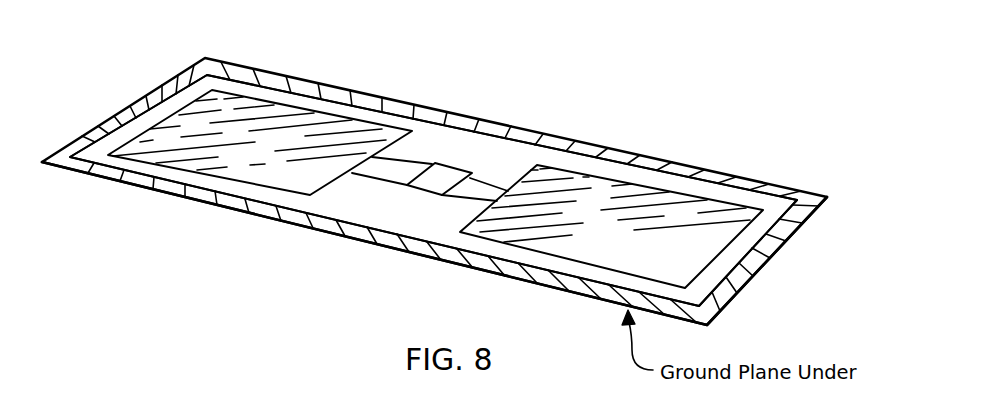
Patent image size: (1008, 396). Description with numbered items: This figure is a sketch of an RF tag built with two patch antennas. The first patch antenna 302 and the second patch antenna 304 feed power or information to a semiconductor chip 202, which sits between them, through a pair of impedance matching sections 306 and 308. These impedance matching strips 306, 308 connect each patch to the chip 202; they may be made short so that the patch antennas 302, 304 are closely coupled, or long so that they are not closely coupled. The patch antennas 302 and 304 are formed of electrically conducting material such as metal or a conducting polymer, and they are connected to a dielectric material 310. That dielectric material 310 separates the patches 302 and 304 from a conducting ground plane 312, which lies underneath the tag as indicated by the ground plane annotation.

The semiconductor chip 202 is at (433, 198).
The patch antenna 302 is at (336, 190).
The patch antenna 304 is at (465, 216).
The impedance matching section 306 is at (397, 155).
The impedance matching section 308 is at (483, 180).
The dielectric material 310 is at (682, 183).
The conducting ground plane 312 is at (778, 255).